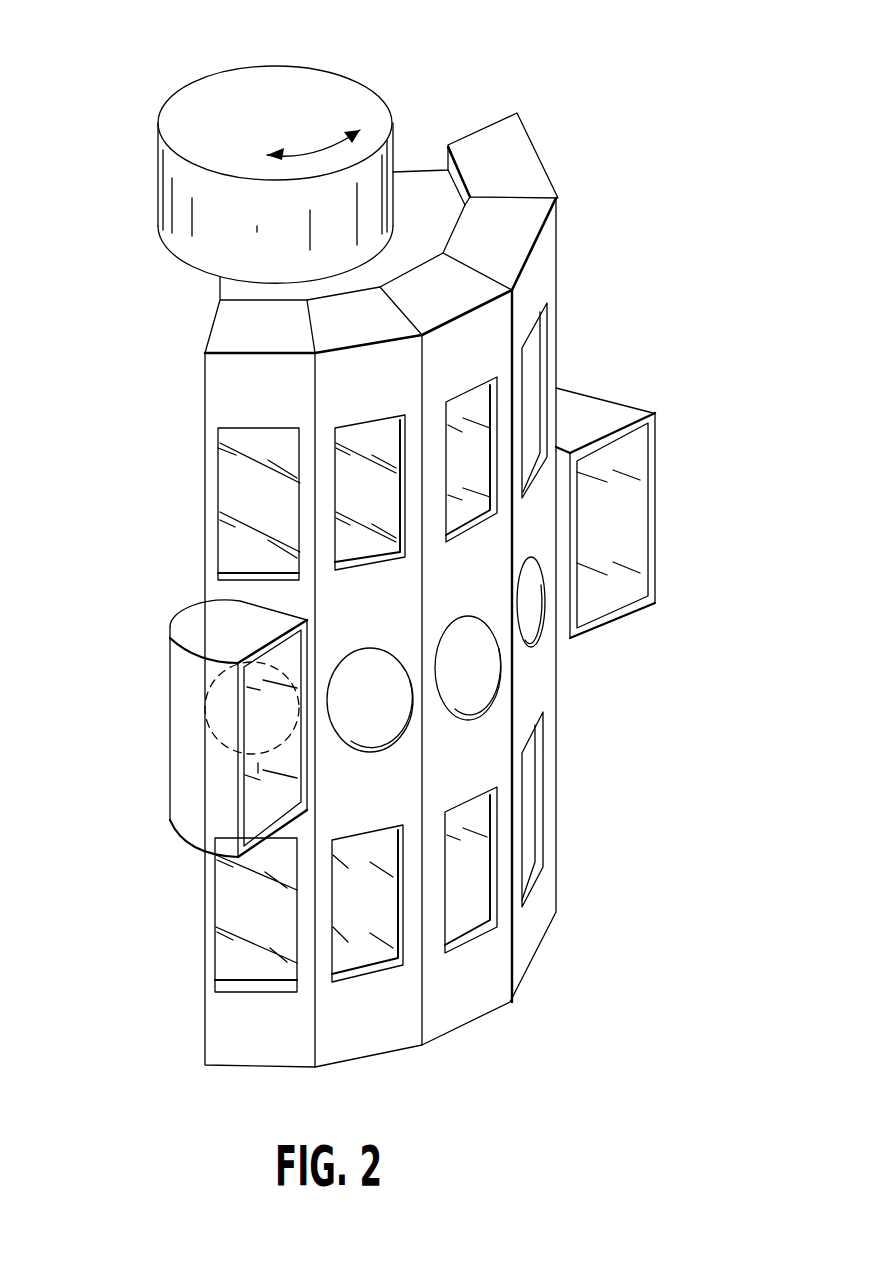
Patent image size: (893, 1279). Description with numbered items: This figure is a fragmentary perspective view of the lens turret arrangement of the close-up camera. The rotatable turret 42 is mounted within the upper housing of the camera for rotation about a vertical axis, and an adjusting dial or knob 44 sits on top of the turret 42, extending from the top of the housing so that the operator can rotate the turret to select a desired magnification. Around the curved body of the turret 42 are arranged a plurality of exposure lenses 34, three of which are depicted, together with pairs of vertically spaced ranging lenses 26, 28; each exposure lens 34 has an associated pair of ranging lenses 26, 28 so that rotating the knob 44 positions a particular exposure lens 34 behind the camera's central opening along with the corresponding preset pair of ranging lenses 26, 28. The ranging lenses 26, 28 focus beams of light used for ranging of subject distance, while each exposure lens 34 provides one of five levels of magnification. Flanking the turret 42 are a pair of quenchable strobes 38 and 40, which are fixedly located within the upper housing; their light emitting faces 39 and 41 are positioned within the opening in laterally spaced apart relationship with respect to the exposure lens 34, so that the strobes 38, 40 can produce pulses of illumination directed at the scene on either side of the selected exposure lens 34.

The rotatable turret 42 is at (566, 122).
The adjusting dial or knob 44 is at (327, 113).
The ranging lens 26 is at (467, 478).
The ranging lens 28 is at (367, 903).
The exposure lens 34 is at (380, 692).
The quenchable strobe 40 is at (664, 489).
The light emitting face 41 is at (613, 513).
The quenchable strobe 38 is at (162, 728).
The light emitting face 39 is at (258, 792).